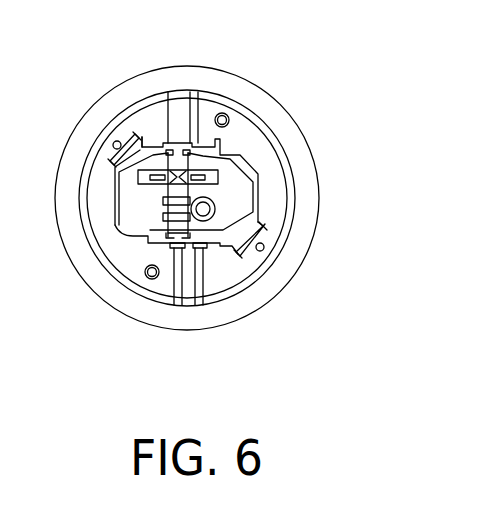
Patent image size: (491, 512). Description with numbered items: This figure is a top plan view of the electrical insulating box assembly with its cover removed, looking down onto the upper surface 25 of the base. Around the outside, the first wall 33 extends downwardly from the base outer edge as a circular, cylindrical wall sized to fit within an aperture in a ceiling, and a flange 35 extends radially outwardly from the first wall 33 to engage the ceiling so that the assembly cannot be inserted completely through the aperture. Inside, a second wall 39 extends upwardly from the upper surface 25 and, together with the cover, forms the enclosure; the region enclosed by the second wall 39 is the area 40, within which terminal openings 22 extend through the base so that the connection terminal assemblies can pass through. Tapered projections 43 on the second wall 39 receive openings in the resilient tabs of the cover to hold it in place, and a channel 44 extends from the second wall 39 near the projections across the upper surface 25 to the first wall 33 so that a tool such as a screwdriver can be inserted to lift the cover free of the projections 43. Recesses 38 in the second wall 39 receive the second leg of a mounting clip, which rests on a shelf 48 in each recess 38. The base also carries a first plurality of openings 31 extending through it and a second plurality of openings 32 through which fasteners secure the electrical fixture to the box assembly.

The terminal openings 22 is at (203, 211).
The upper surface 25 is at (243, 135).
The first plurality of openings 31 is at (114, 142).
The second plurality of openings 32 is at (228, 117).
The first wall 33 is at (283, 162).
The flange 35 is at (253, 313).
The recess 38 is at (135, 138).
The second wall 39 is at (150, 229).
The area 40 is at (137, 213).
The tapered projections 43 is at (198, 92).
The channel 44 is at (192, 143).
The shelf 48 is at (113, 145).